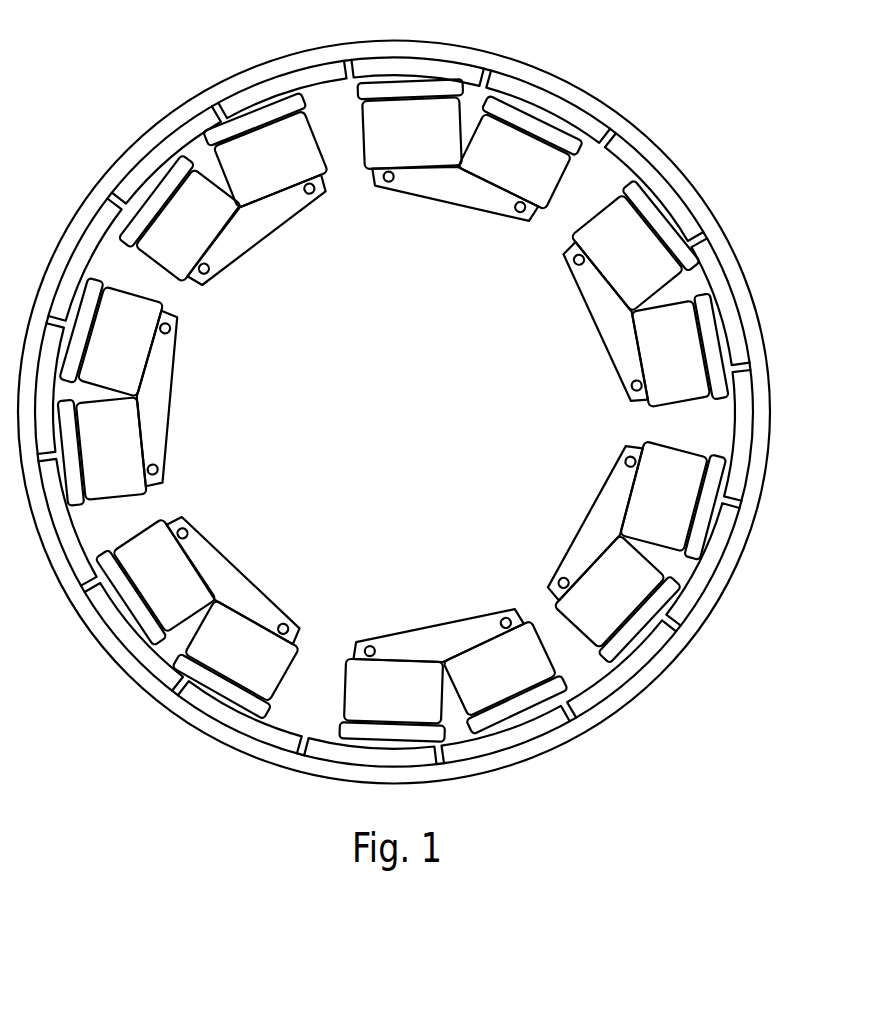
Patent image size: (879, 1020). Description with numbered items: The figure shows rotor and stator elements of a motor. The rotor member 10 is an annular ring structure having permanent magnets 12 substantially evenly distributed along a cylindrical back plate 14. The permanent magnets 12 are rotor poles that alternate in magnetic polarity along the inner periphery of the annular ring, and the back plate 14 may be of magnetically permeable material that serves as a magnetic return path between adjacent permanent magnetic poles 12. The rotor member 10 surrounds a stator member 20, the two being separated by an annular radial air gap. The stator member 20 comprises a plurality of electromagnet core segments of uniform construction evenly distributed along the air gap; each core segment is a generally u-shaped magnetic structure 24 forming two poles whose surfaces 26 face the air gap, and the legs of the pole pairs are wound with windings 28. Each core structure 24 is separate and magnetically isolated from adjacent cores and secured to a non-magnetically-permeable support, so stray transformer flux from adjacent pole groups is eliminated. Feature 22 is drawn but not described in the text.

The rotor member 10 is at (412, 393).
The permanent magnets 12 is at (637, 133).
The cylindrical back plate 14 is at (572, 87).
The stator member 20 is at (233, 366).
The fastener hole 22 is at (408, 173).
The u-shaped magnetic structure 24 is at (481, 217).
The pole surfaces 26 is at (395, 90).
The windings 28 is at (428, 115).